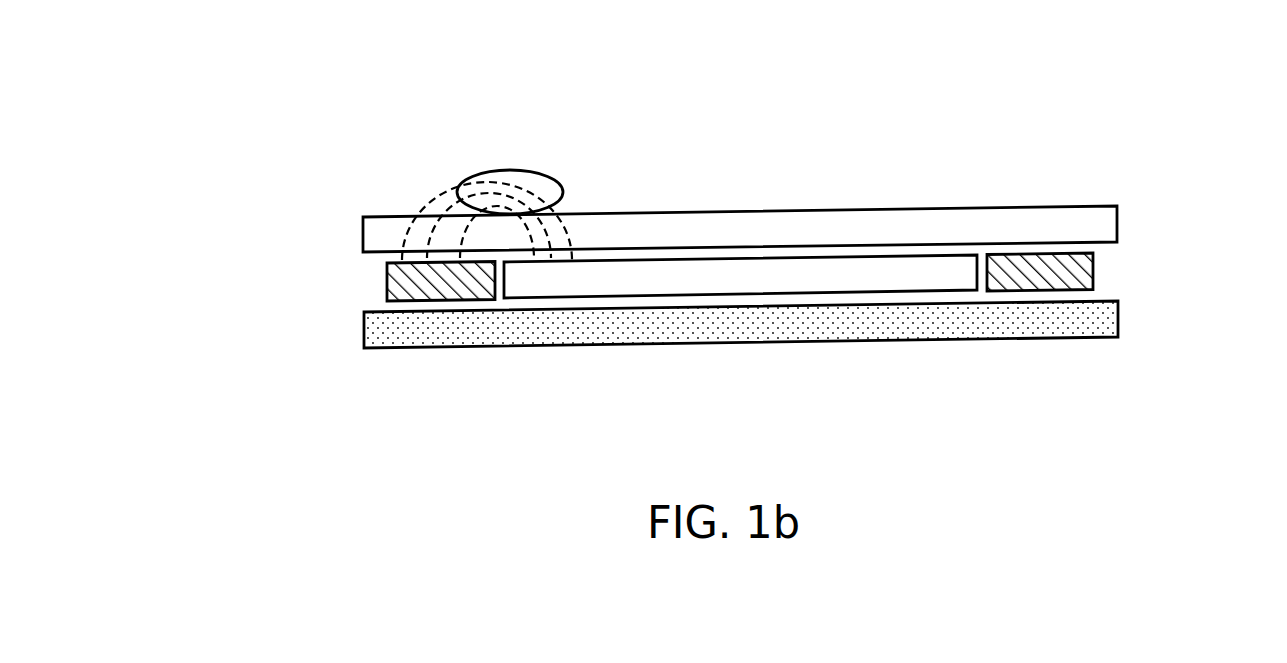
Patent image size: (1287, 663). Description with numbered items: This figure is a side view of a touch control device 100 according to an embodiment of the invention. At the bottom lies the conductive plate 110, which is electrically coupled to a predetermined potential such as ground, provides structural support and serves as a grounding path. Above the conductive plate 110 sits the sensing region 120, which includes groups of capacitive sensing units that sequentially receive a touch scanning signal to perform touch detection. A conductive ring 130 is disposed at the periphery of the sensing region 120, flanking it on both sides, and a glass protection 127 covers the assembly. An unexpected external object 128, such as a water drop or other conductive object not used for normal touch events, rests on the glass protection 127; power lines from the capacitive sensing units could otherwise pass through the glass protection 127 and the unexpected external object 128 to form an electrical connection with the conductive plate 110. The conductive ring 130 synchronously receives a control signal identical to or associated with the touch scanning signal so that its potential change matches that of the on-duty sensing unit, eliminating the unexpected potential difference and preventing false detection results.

The touch control device 100 is at (240, 490).
The conductive plate 110 is at (725, 327).
The sensing region 120 is at (905, 280).
The glass protection 127 is at (790, 223).
The unexpected external object 128 is at (520, 170).
The conductive ring 130 is at (398, 270).